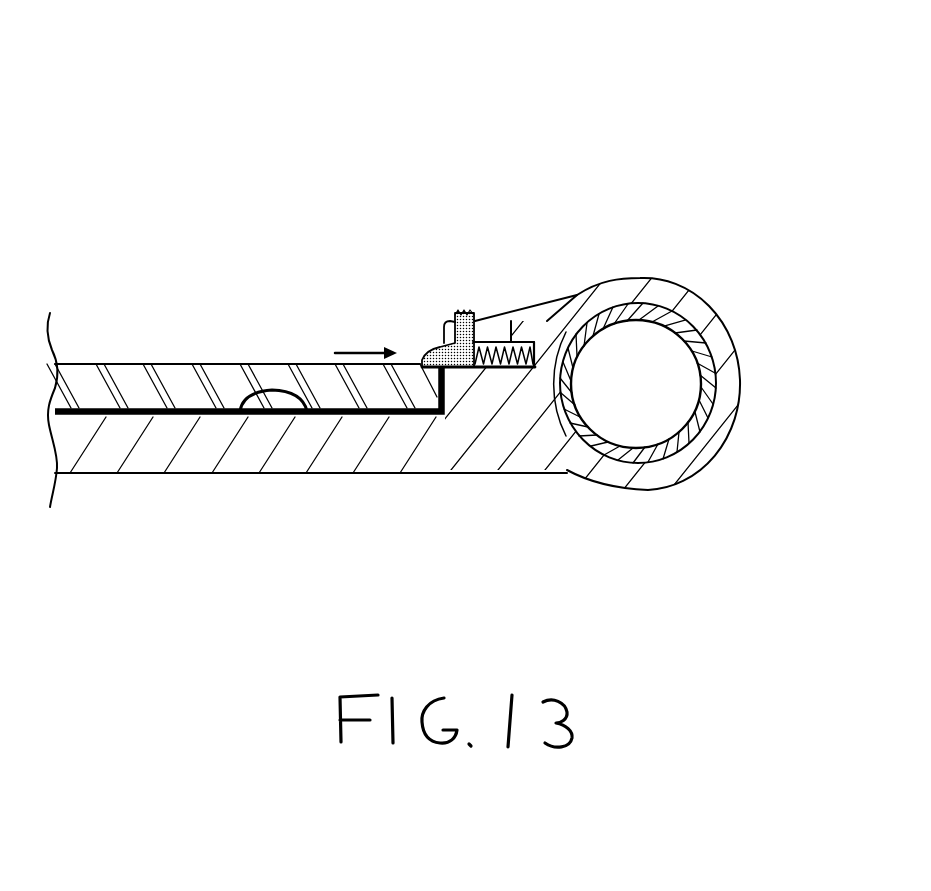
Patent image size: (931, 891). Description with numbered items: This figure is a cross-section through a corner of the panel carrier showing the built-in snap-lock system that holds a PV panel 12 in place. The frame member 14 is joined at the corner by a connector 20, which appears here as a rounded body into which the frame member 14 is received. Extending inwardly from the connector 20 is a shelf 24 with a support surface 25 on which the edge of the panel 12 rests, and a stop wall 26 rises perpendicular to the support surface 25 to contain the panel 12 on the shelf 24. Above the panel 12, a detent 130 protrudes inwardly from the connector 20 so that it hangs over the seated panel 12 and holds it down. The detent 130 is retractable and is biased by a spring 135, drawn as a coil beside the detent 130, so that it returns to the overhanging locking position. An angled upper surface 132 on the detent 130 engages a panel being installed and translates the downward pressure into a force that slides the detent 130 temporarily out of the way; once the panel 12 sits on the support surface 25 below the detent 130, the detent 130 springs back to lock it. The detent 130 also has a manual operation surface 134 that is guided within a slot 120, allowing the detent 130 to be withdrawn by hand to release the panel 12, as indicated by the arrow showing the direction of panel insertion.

The PV panel 12 is at (217, 387).
The frame member 14 is at (625, 304).
The connector 20 is at (683, 290).
The shelf 24 is at (112, 453).
The support surface 25 is at (306, 417).
The stop wall 26 is at (445, 400).
The slot 120 is at (491, 329).
The detent 130 is at (463, 358).
The angled upper surface 132 is at (433, 352).
The manual operation surface 134 is at (463, 312).
The spring 135 is at (513, 360).